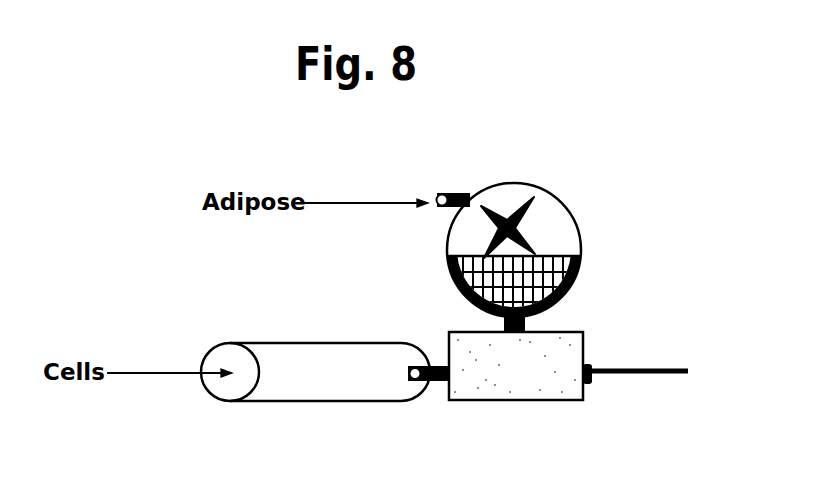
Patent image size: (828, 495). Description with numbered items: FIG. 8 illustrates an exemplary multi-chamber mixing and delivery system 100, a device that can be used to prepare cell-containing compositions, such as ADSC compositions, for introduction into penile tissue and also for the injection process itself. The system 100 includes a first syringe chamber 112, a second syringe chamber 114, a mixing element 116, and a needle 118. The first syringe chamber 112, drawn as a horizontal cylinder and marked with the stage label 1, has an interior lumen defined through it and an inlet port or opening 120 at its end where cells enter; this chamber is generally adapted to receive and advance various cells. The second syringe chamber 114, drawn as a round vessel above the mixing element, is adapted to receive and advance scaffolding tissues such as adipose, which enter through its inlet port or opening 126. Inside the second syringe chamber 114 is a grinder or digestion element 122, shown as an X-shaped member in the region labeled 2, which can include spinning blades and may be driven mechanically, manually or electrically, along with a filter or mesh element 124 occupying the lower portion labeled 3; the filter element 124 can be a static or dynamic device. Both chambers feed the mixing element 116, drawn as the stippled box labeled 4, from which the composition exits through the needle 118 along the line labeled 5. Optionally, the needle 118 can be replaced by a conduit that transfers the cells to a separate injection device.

The multi-chamber mixing and delivery system 100 is at (146, 207).
The first syringe chamber 112 is at (258, 343).
The second syringe chamber 114 is at (567, 197).
The mixing element 116 is at (565, 400).
The needle 118 is at (668, 370).
The inlet port 120 is at (226, 355).
The grinder element 122 is at (533, 212).
The filter element 124 is at (579, 257).
The inlet port 126 is at (455, 192).
The cell chamber 1 is at (323, 332).
The adipose chamber 2 is at (510, 200).
The filter chamber 3 is at (599, 275).
The mixing chamber 4 is at (516, 370).
The output 5 is at (638, 359).